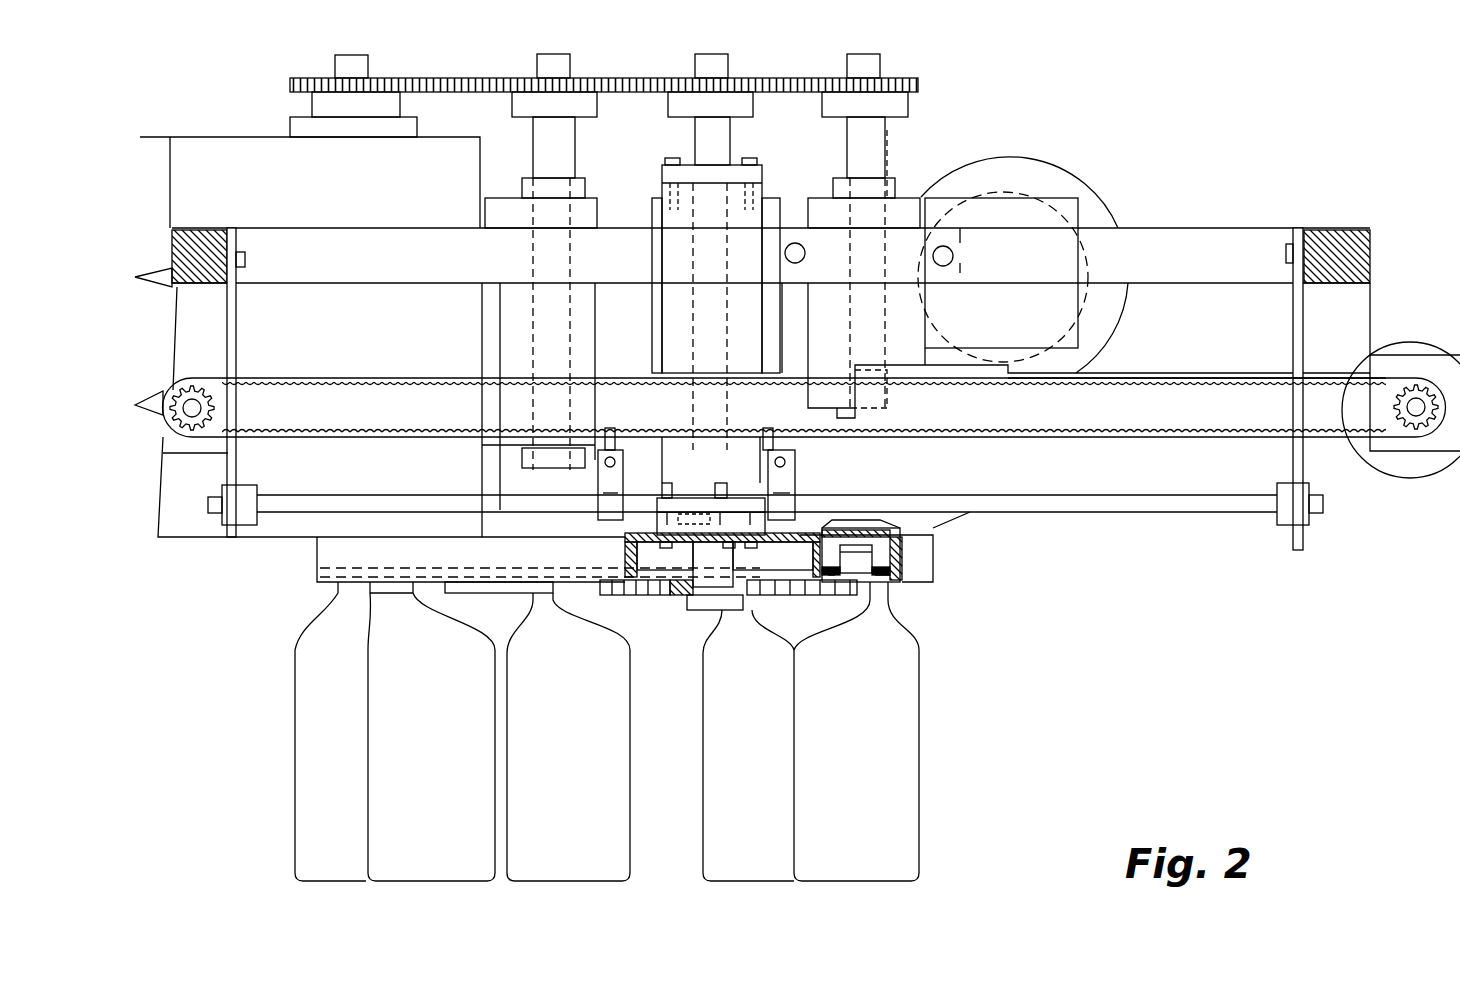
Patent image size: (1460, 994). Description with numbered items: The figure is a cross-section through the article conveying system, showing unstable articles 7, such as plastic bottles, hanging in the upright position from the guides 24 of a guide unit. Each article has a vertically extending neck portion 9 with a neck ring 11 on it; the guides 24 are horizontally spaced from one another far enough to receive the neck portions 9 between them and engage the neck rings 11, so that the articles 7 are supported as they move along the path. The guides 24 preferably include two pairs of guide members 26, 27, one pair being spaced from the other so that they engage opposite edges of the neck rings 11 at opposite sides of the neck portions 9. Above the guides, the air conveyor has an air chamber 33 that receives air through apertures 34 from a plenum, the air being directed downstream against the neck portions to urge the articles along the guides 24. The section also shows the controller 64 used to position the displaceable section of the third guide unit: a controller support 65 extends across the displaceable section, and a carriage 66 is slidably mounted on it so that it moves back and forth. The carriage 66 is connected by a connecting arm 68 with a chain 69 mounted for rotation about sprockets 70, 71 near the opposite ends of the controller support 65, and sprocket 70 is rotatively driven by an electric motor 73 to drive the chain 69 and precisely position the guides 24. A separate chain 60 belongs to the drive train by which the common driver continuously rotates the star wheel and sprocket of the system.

The chain 60 is at (448, 76).
The controller 64 is at (1392, 250).
The controller support 65 is at (1207, 343).
The electric motor 73 is at (1442, 307).
The sprocket 70 is at (1432, 428).
The sprocket 71 is at (198, 390).
The chain 69 is at (375, 383).
The connecting arm 68 is at (645, 408).
The apertures 34 is at (843, 518).
The air chamber 33 is at (880, 538).
The neck portion 9 is at (877, 560).
The guides 24 is at (885, 567).
The neck ring 11 is at (870, 584).
The guide members 26 is at (830, 558).
The guide members 27 is at (840, 576).
The carriage 66 is at (653, 557).
The articles 7 is at (573, 731).